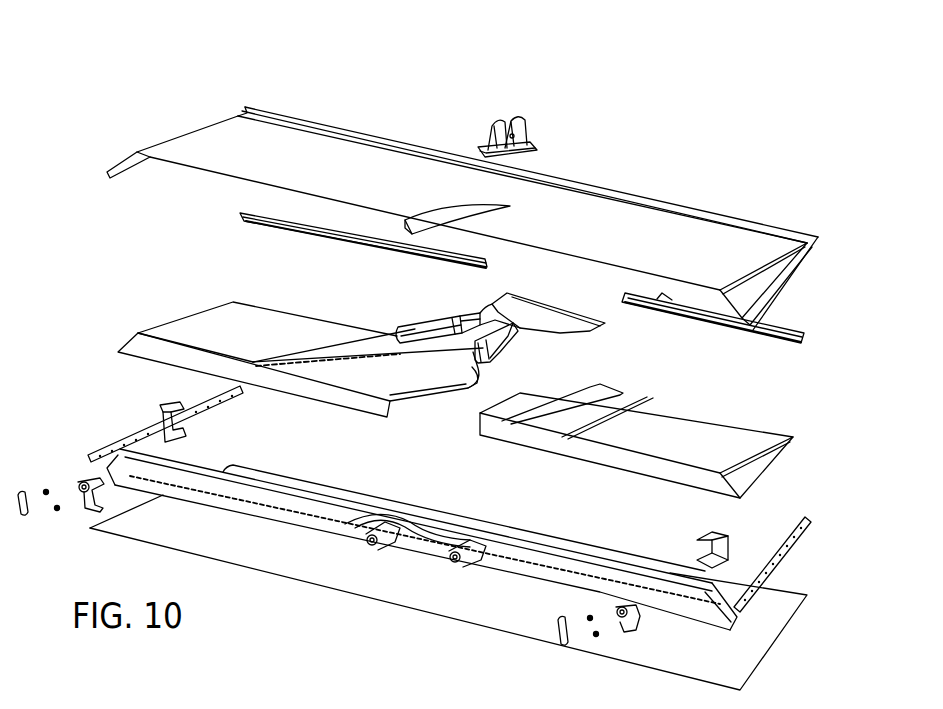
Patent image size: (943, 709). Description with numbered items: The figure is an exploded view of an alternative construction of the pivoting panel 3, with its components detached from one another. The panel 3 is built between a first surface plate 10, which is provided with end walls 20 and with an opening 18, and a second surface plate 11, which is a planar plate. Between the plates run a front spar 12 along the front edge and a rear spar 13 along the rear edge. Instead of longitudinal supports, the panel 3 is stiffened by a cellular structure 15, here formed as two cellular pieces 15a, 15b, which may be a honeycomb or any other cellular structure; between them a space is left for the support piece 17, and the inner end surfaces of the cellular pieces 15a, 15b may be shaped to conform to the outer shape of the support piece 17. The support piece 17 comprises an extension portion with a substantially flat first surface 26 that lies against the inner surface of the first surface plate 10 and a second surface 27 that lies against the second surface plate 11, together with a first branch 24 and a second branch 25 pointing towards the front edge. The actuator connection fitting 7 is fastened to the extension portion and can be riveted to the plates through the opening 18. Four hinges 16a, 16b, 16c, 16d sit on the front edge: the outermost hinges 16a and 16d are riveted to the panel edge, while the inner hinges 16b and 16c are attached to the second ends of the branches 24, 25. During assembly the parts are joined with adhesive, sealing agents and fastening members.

The panel 3 is at (333, 104).
The first surface plate 10 is at (360, 167).
The end walls 20 is at (142, 168).
The rear spar 13 is at (290, 226).
The opening 18 is at (470, 215).
The actuator connection fitting 7 is at (520, 132).
The cellular structure 15a is at (198, 332).
The cellular structure 15b is at (668, 421).
The support piece 17 is at (602, 319).
The first branch 24 is at (421, 324).
The first surface 26 is at (500, 304).
The second branch 25 is at (502, 346).
The second surface 27 is at (562, 334).
The cellular structure 15 is at (786, 486).
The second surface plate 11 is at (683, 660).
The front spar 12 is at (137, 472).
The hinge 16a is at (84, 488).
The hinge 16b is at (362, 548).
The hinge 16c is at (456, 562).
The hinge 16d is at (625, 606).